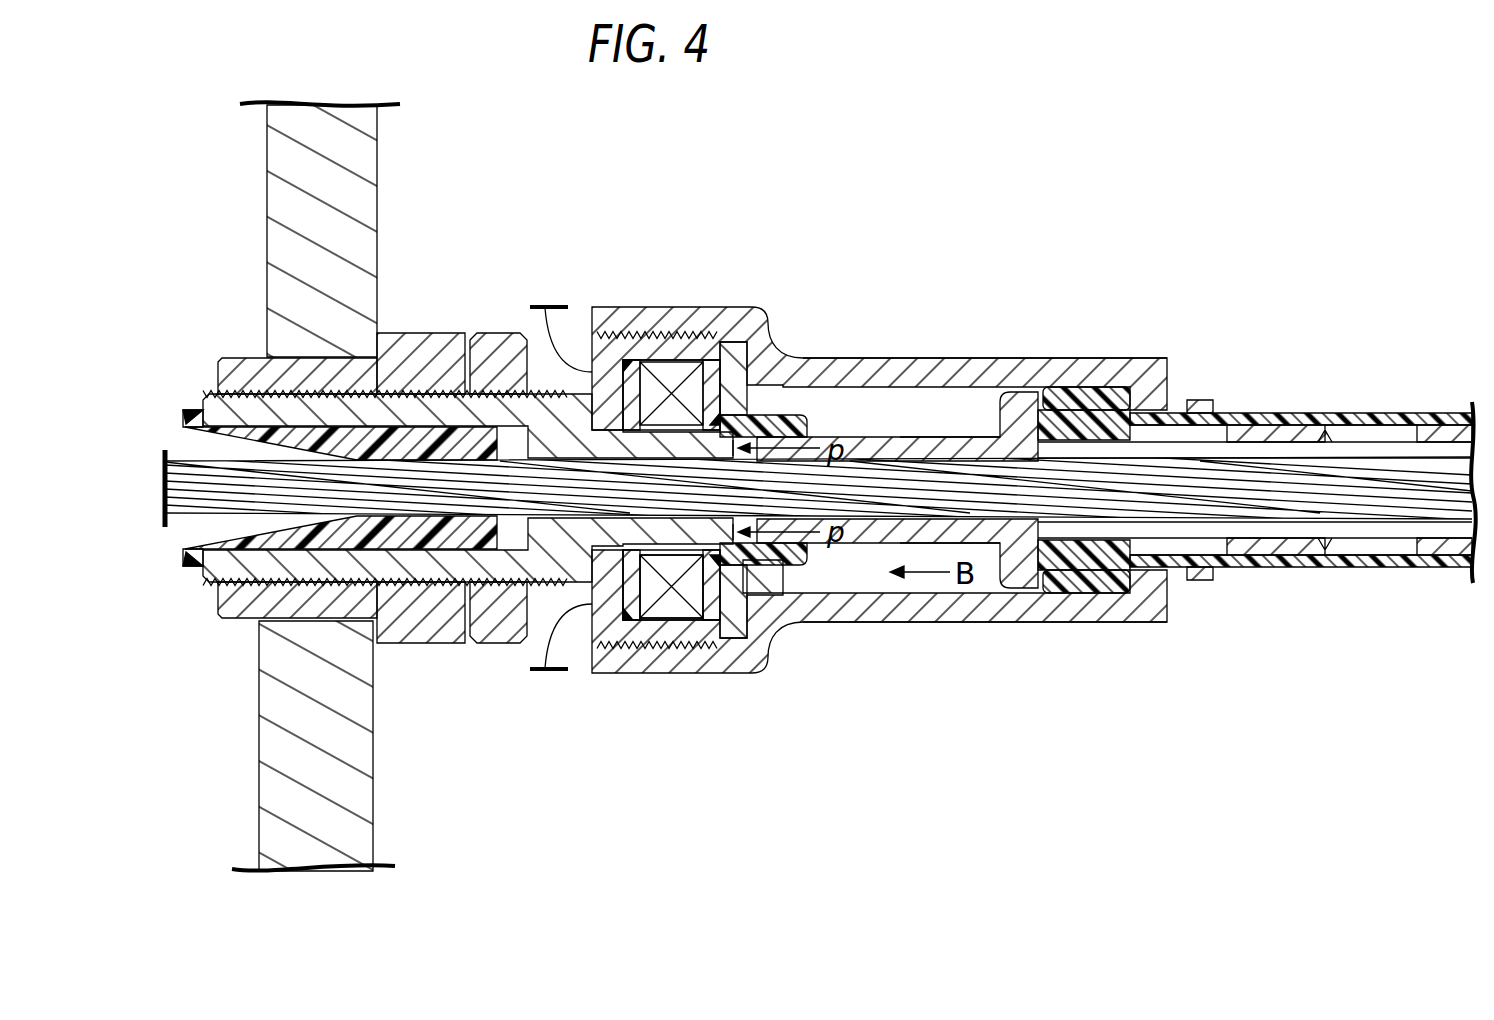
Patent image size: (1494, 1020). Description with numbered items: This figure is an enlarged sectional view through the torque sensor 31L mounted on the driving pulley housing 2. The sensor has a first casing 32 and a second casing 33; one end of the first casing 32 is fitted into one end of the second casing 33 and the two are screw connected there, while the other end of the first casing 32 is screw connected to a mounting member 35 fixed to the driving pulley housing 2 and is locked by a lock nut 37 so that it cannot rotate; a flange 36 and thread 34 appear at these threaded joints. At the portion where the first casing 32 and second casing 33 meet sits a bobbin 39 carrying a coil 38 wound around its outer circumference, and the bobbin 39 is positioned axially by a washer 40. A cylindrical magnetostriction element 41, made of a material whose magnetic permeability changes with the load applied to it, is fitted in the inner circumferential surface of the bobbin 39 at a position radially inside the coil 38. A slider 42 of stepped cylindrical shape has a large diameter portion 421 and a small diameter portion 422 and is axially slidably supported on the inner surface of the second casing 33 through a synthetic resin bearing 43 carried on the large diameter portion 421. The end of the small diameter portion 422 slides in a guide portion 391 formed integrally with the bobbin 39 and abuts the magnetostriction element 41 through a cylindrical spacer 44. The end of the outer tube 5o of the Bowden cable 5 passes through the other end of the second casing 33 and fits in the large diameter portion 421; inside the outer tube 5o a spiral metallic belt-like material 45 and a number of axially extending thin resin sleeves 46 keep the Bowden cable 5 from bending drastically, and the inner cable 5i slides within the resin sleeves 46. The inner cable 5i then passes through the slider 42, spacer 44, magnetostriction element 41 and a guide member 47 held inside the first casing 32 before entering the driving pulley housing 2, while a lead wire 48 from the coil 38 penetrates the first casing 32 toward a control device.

The driving pulley housing 2 is at (350, 200).
The flange 36 is at (295, 393).
The mounting member 35 is at (407, 620).
The lock nut 37 is at (492, 625).
The first casing 32 is at (416, 386).
The guide member 47 is at (187, 410).
The bobbin 39 is at (606, 600).
The torque sensor 31L is at (717, 298).
The thread 34 is at (642, 333).
The second casing 33 is at (820, 348).
The lead wire 48 is at (556, 330).
The washer 40 is at (740, 368).
The cylindrical spacer 44 is at (745, 422).
The magnetostriction element 41 is at (667, 528).
The coil 38 is at (676, 608).
The slider 42 is at (970, 424).
The small diameter portion 422 is at (950, 469).
The large diameter portion 421 is at (1024, 397).
The synthetic resin bearing 43 is at (1085, 393).
The outer tube 5o is at (1223, 410).
The spiral metallic belt-like material 45 is at (1268, 430).
The thin resin sleeves 46 is at (1437, 453).
The inner cable 5i is at (1256, 497).
The Bowden cable 5 is at (1330, 400).
The guide portion 391 is at (790, 560).